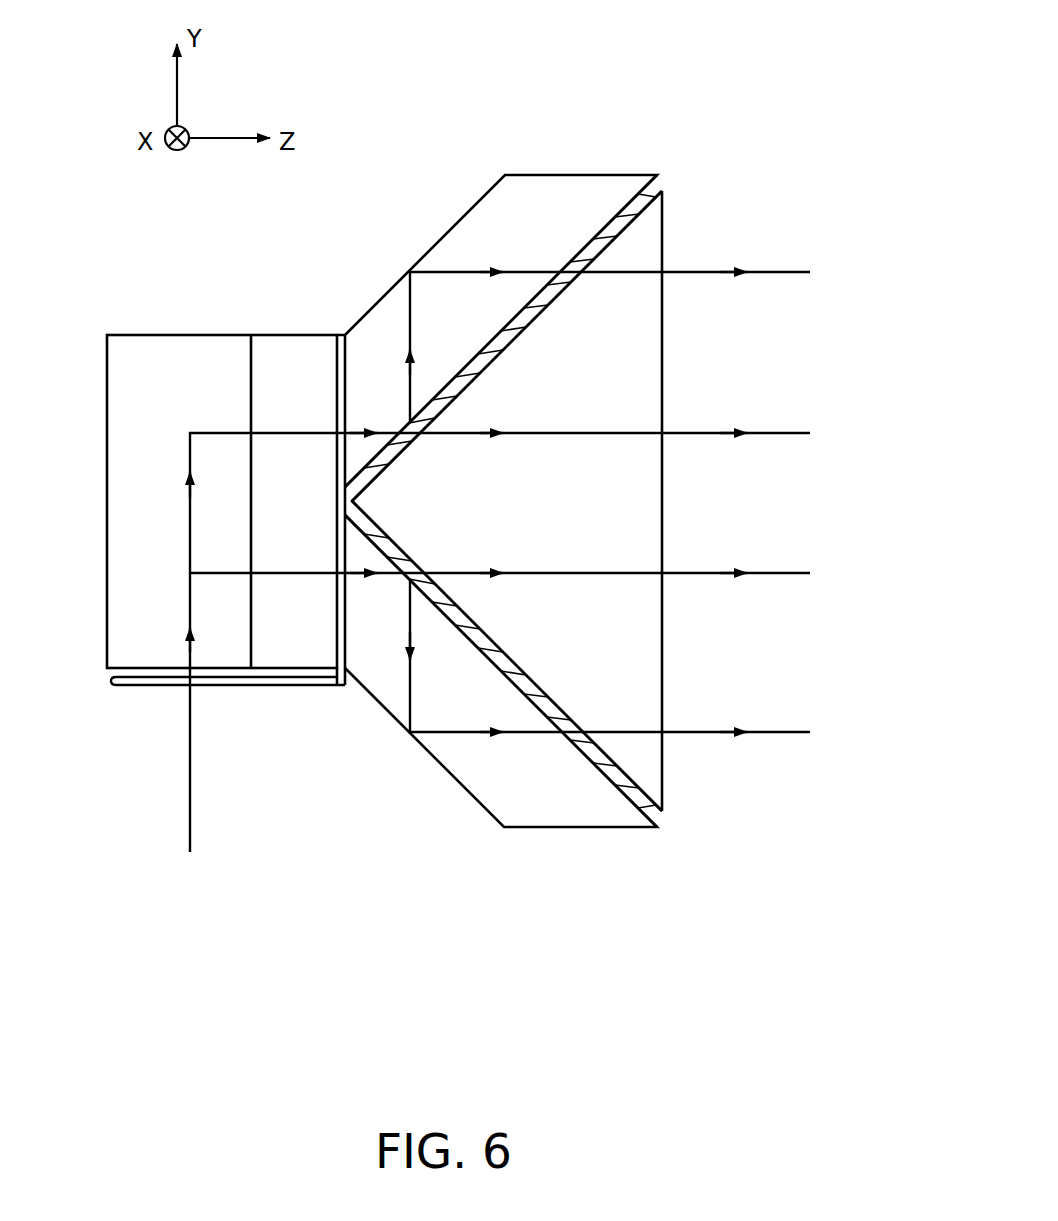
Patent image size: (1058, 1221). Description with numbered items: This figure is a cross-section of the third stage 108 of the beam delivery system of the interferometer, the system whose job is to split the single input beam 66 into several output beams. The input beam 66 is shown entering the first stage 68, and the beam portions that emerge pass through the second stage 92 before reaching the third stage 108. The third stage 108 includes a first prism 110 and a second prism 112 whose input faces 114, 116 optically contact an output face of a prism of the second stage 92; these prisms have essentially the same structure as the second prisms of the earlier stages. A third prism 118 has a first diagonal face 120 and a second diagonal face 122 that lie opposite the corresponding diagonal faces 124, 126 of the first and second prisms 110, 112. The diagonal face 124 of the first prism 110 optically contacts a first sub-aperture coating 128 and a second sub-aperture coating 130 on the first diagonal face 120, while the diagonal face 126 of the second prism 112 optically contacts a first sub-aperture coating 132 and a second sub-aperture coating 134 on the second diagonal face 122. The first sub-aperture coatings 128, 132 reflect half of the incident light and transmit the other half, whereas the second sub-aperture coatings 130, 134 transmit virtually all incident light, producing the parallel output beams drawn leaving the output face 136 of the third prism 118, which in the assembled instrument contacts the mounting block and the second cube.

The input beam 66 is at (192, 803).
The first stage 68 is at (108, 735).
The second stage 92 is at (292, 700).
The third stage 108 is at (510, 873).
The first prism 110 is at (501, 331).
The second prism 112 is at (501, 671).
The input face 114 is at (373, 356).
The input face 116 is at (350, 662).
The third prism 118 is at (507, 501).
The first diagonal face 120 is at (524, 330).
The second diagonal face 122 is at (505, 652).
The diagonal face 124 is at (634, 198).
The diagonal face 126 is at (644, 793).
The first sub-aperture coating 128 is at (410, 443).
The second sub-aperture coating 130 is at (575, 283).
The first sub-aperture coating 132 is at (411, 560).
The second sub-aperture coating 134 is at (560, 708).
The output face 136 is at (662, 612).